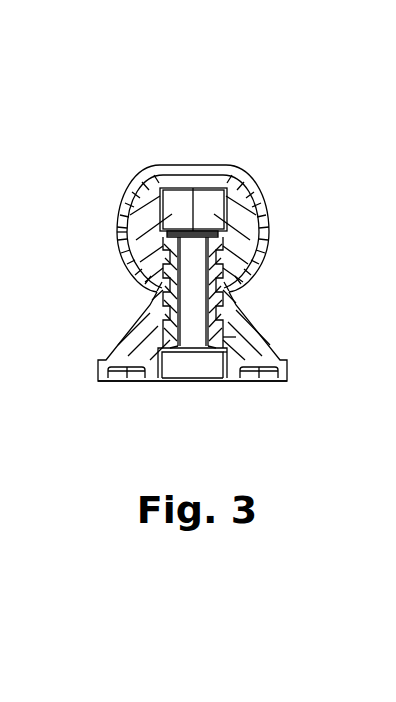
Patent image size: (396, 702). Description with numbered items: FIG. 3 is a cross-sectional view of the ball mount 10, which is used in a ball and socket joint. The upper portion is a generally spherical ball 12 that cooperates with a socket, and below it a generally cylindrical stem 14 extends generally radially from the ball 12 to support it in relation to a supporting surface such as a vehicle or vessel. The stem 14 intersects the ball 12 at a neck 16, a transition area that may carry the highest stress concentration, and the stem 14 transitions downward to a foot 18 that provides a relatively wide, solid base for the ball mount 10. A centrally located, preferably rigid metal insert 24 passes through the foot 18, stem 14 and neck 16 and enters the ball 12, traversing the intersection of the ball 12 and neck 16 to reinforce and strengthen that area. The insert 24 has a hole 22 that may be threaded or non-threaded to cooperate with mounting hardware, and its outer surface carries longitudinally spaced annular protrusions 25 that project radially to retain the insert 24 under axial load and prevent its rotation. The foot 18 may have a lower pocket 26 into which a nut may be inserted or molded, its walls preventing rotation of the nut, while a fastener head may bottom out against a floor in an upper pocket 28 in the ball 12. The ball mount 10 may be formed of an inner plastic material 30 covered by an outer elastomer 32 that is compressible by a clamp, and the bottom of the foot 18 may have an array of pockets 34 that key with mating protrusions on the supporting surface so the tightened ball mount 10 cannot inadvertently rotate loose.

The ball mount 10 is at (140, 118).
The ball 12 is at (277, 232).
The stem 14 is at (153, 327).
The neck 16 is at (227, 303).
The foot 18 is at (102, 365).
The hole 22 is at (189, 350).
The insert 24 is at (210, 352).
The annular protrusions 25 is at (235, 312).
The lower pocket 26 is at (200, 365).
The upper pocket 28 is at (210, 200).
The inner plastic material 30 is at (145, 195).
The outer elastomer 32 is at (130, 230).
The pockets 34 is at (117, 383).